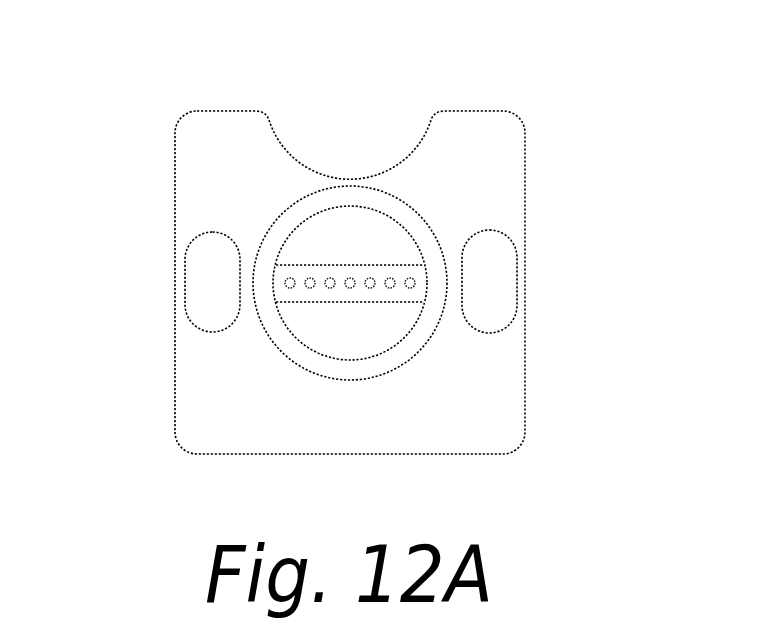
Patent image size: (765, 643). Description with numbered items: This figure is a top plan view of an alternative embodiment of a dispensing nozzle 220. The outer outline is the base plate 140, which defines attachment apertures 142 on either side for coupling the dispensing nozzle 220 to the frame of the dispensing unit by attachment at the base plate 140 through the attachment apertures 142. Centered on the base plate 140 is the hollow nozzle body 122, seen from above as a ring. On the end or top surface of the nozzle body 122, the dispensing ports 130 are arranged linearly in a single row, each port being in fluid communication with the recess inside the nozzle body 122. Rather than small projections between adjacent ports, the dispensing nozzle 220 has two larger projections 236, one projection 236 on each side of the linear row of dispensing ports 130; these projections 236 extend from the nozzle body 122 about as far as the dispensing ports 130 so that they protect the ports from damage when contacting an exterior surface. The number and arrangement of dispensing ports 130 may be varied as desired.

The dispensing nozzle 220 is at (127, 86).
The base plate 140 is at (507, 193).
The attachment apertures 142 is at (178, 306).
The nozzle body 122 is at (287, 340).
The projections 236 is at (341, 230).
The dispensing ports 130 is at (415, 282).